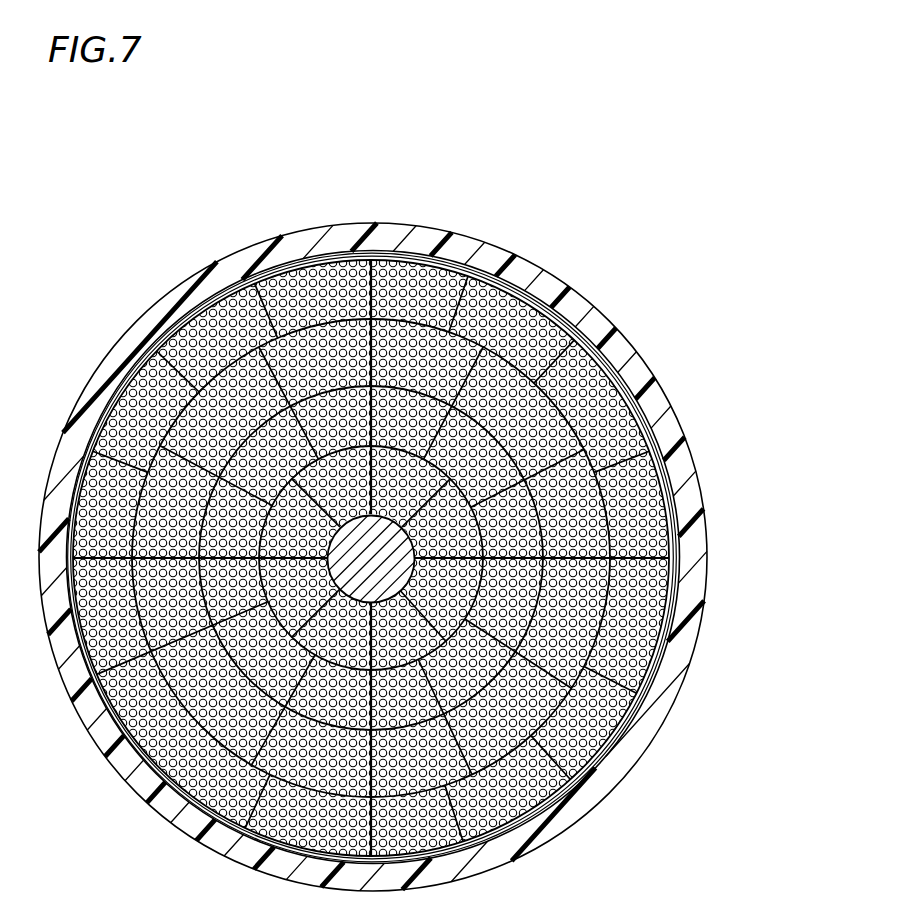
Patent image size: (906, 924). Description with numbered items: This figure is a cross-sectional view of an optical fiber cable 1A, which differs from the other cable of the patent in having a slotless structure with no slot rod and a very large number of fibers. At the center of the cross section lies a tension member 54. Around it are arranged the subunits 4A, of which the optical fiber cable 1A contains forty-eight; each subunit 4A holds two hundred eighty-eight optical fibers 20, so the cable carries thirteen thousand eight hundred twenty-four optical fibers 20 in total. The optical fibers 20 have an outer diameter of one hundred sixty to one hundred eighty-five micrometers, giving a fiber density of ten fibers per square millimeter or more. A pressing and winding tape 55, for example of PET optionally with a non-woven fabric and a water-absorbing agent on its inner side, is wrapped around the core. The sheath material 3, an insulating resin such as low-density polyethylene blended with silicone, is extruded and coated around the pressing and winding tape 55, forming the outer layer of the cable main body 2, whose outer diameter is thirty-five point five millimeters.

The optical fiber cable 1A is at (612, 210).
The cable main body 2 is at (673, 417).
The sheath material 3 is at (633, 370).
The pressing and winding tape 55 is at (665, 473).
The optical fibers 20 is at (678, 556).
The subunit 4A is at (590, 684).
The tension member 54 is at (368, 530).